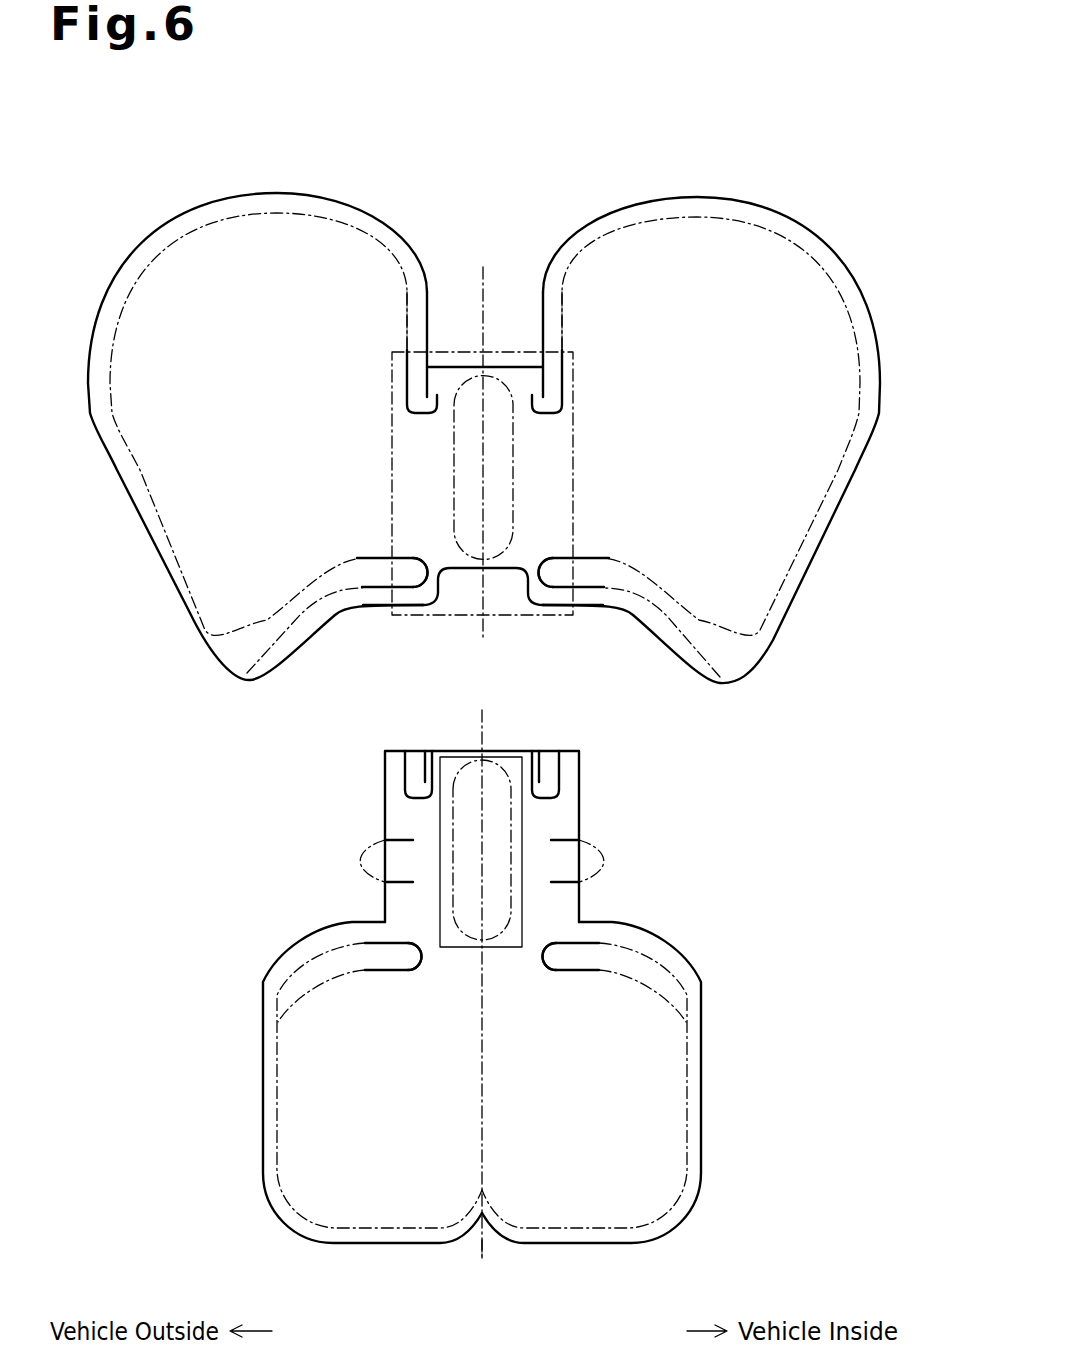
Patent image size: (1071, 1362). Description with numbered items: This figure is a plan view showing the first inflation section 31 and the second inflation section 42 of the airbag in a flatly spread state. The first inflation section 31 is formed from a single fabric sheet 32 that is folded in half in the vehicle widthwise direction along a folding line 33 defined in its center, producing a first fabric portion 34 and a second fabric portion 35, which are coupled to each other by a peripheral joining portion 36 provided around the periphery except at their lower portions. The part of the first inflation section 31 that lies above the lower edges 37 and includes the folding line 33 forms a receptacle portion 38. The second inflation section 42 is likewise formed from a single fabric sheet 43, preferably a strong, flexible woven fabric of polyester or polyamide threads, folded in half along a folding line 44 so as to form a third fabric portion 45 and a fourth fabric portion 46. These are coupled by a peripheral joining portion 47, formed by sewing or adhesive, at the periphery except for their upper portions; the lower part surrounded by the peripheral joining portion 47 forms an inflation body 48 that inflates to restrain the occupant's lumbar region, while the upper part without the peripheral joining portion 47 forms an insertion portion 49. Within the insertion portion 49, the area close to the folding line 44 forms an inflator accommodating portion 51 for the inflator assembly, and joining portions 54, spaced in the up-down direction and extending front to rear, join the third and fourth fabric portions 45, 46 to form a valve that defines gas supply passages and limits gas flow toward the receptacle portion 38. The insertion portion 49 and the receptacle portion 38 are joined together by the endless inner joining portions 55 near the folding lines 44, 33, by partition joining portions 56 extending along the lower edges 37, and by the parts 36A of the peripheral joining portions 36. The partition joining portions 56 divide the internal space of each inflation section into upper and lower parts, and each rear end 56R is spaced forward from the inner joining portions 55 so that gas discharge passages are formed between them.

The first inflation section 31 is at (803, 172).
The fabric sheet 32 is at (690, 196).
The folding line 33 is at (484, 620).
The first fabric portion 34 is at (165, 232).
The second fabric portion 35 is at (808, 235).
The peripheral joining portion 36 is at (352, 228).
The part of peripheral joining portion 36A is at (407, 392).
The lower edge 37 is at (400, 607).
The receptacle portion 38 is at (574, 515).
The second inflation section 42 is at (245, 823).
The fabric sheet 43 is at (638, 933).
The folding line 44 is at (484, 1275).
The third fabric portion 45 is at (263, 1042).
The fourth fabric portion 46 is at (694, 1042).
The peripheral joining portion 47 is at (277, 1115).
The inflation body 48 is at (297, 918).
The insertion portion 49 is at (310, 838).
The inflator accommodating portion 51 is at (493, 752).
The joining portion 54 is at (373, 868).
The inner joining portion 55 is at (514, 472).
The partition joining portion 56 is at (322, 610).
The rear end of partition joining portion 56R is at (429, 560).